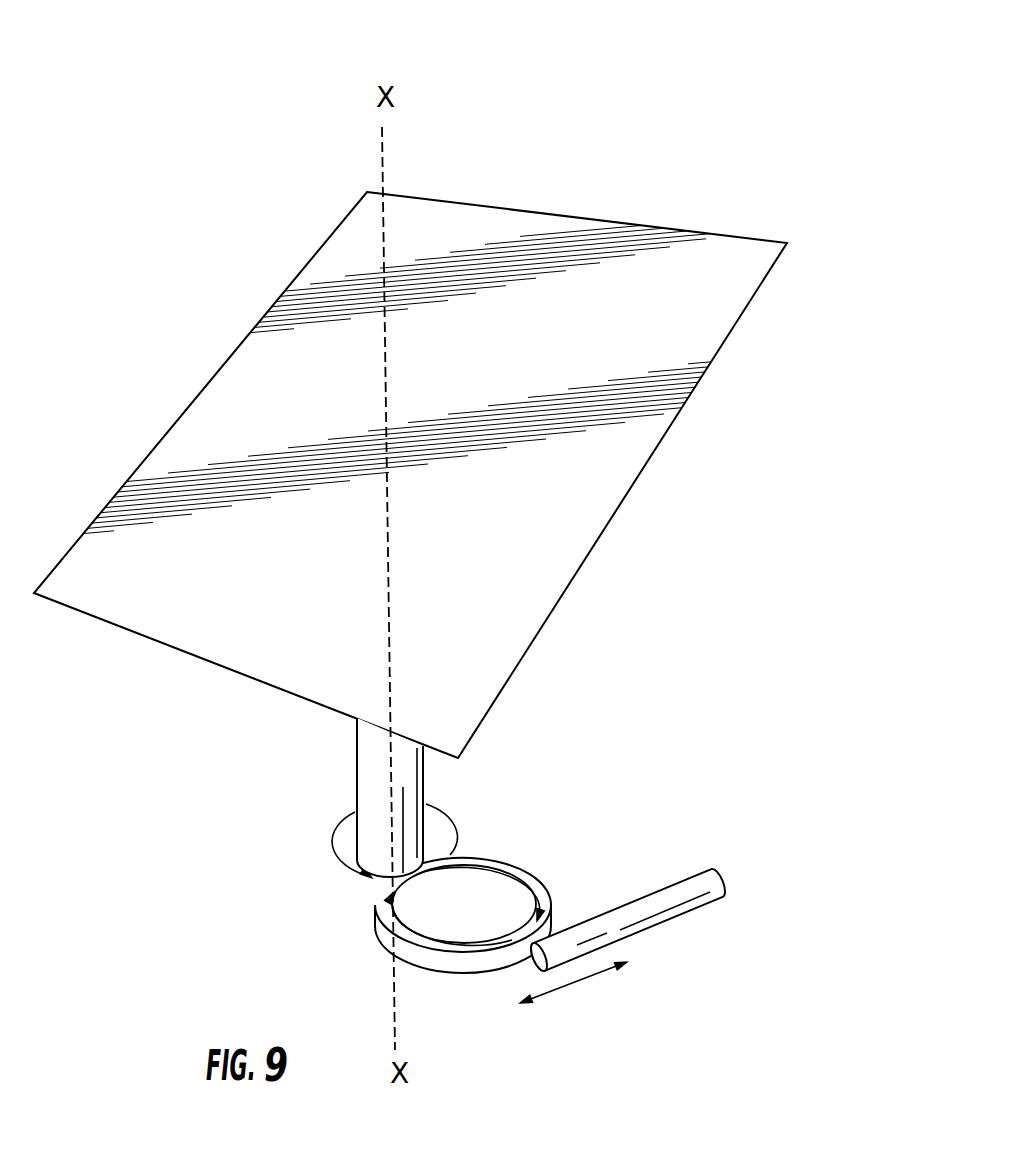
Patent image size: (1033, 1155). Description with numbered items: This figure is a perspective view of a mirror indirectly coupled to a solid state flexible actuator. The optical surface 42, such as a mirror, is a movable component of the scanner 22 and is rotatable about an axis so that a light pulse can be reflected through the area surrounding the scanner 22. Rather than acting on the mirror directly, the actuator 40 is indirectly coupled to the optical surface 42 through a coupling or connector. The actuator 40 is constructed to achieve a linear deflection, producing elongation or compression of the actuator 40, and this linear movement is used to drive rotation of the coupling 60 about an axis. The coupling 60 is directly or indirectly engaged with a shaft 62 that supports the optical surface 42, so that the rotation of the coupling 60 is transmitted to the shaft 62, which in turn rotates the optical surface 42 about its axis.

The scanner 22 is at (410, 494).
The optical surface 42 is at (236, 428).
The shaft 62 is at (357, 775).
The coupling 60 is at (490, 895).
The actuator 40 is at (686, 903).